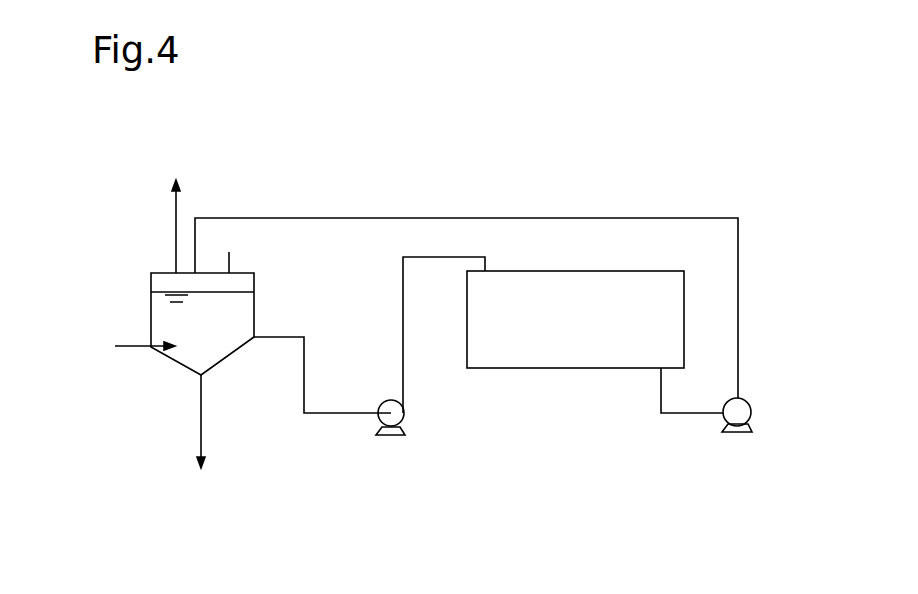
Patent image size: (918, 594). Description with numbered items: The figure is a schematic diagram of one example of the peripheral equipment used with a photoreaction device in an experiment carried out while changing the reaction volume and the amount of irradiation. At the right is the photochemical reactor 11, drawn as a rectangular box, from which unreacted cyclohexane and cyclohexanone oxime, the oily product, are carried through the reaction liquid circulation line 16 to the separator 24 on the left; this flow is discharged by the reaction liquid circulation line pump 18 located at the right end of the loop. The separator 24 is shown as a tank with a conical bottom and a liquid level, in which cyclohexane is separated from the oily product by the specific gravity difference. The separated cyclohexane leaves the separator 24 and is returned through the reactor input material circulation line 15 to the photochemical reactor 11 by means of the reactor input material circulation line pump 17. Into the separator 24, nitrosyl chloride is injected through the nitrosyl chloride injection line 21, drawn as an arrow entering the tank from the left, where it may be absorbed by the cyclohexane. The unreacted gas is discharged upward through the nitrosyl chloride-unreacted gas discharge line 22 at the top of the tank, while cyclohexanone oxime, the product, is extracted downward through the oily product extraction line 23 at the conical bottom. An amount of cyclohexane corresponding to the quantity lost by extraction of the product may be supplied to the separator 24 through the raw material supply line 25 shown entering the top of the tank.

The photochemical reactor 11 is at (558, 345).
The reactor input material circulation line 15 is at (405, 364).
The reaction liquid circulation line 16 is at (480, 212).
The reactor input material circulation line pump 17 is at (390, 447).
The reaction liquid circulation line pump 18 is at (740, 440).
The nitrosyl chloride injection line 21 is at (129, 346).
The nitrosyl chloride-unreacted gas discharge line 22 is at (172, 213).
The oily product extraction line 23 is at (200, 439).
The separator 24 is at (178, 352).
The raw material supply line 25 is at (249, 253).